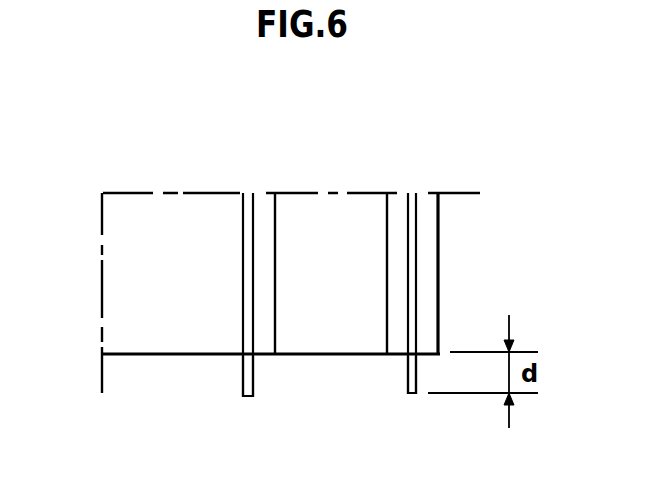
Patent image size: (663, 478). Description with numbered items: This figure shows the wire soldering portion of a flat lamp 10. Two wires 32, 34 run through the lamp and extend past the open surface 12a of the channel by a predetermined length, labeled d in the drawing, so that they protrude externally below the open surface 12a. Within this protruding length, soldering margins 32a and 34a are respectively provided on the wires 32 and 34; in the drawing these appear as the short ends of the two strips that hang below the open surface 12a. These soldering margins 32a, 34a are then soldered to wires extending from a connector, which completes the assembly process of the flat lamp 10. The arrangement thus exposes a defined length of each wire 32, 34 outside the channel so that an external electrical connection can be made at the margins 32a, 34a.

The magnetic block / body 10 is at (323, 205).
The open surface 12a is at (300, 357).
The wire 32 is at (243, 256).
The soldering margin 32a is at (247, 381).
The wire 34 is at (417, 298).
The soldering margin 34a is at (410, 379).